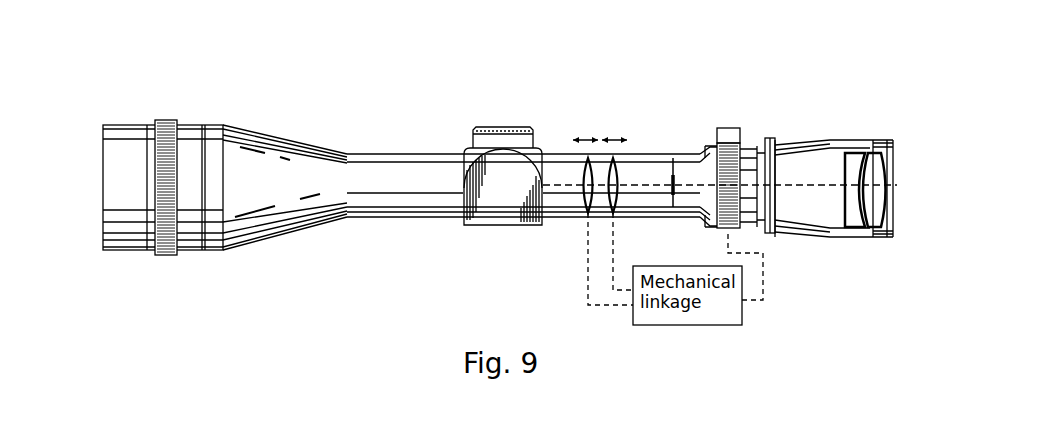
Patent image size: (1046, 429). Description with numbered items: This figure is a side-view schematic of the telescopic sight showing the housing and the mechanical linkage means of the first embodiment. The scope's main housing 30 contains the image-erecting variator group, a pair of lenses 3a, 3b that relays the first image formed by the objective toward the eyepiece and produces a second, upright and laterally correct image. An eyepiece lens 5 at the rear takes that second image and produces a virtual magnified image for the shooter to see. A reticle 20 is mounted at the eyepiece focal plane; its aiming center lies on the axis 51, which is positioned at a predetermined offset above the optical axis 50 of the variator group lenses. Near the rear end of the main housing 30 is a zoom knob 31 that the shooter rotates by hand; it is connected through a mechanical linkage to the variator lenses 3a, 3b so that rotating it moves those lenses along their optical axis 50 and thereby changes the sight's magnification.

The main housing 30 is at (305, 143).
The variator group lens 3a is at (586, 214).
The variator group lens 3b is at (619, 160).
The axis of the reticle aiming center 51 is at (645, 180).
The reticle 20 is at (697, 153).
The zoom knob 31 is at (728, 128).
The optical axis 50 is at (798, 185).
The eyepiece lens 5 is at (853, 228).